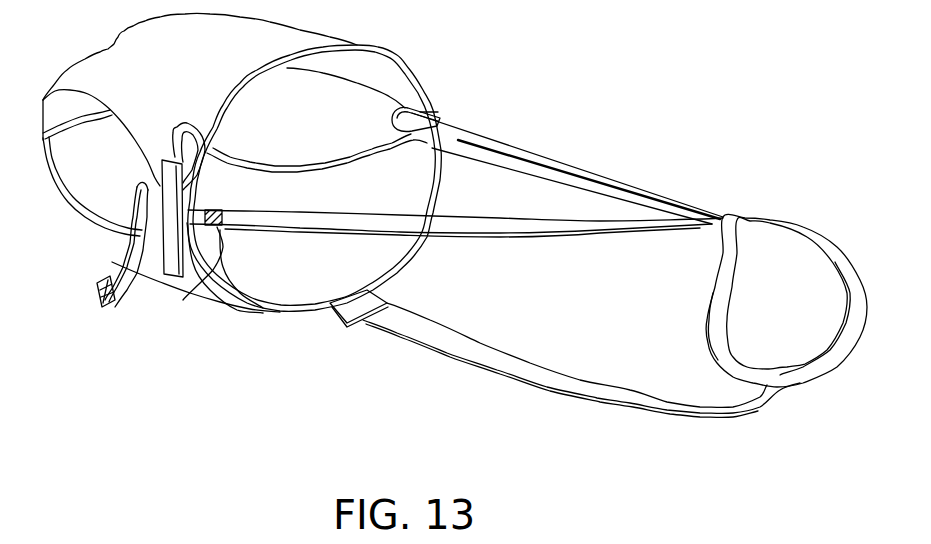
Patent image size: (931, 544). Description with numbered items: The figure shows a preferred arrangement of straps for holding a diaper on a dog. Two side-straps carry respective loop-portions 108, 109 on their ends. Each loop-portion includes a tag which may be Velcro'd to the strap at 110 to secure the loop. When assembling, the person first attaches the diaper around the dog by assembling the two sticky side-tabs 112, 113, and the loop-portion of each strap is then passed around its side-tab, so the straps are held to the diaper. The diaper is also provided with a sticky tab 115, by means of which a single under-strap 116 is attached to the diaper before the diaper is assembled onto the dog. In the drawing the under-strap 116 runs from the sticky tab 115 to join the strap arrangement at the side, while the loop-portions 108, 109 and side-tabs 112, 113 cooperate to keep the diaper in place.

The loop-portion 108 is at (120, 270).
The loop-portion 109 is at (460, 143).
The Velcro attachment 110 is at (228, 258).
The side-tab 112 is at (208, 133).
The side-tab 113 is at (413, 87).
The sticky tab 115 is at (347, 307).
The under-strap 116 is at (490, 363).